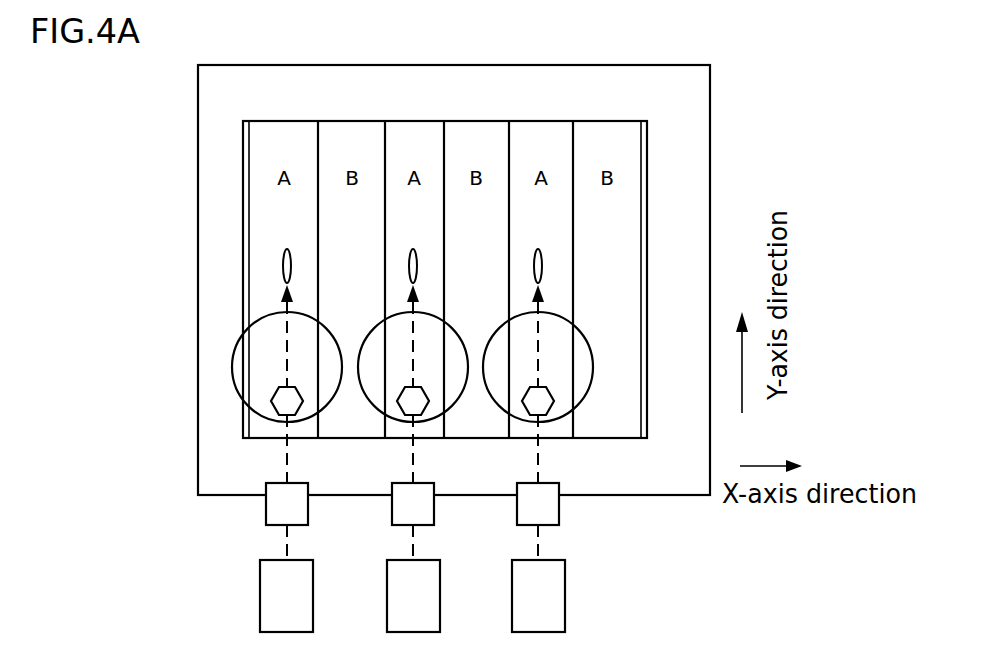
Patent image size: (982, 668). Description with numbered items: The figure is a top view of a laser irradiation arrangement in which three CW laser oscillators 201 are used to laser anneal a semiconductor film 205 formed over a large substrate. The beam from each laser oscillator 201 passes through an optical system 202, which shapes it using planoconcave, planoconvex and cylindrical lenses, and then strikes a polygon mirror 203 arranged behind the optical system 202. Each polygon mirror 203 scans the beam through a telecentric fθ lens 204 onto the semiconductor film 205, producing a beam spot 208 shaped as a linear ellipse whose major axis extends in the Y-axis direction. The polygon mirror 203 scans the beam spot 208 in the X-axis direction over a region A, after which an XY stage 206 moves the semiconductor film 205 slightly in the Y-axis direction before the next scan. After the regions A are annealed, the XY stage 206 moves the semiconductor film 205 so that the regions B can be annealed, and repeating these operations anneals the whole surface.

The CW laser oscillator 201 is at (260, 595).
The optical system 202 is at (266, 506).
The polygon mirror 203 is at (275, 398).
The telecentric fθ lens 204 is at (236, 352).
The semiconductor film 205 is at (618, 438).
The XY stage 206 is at (198, 451).
The beam spot 208 is at (286, 257).